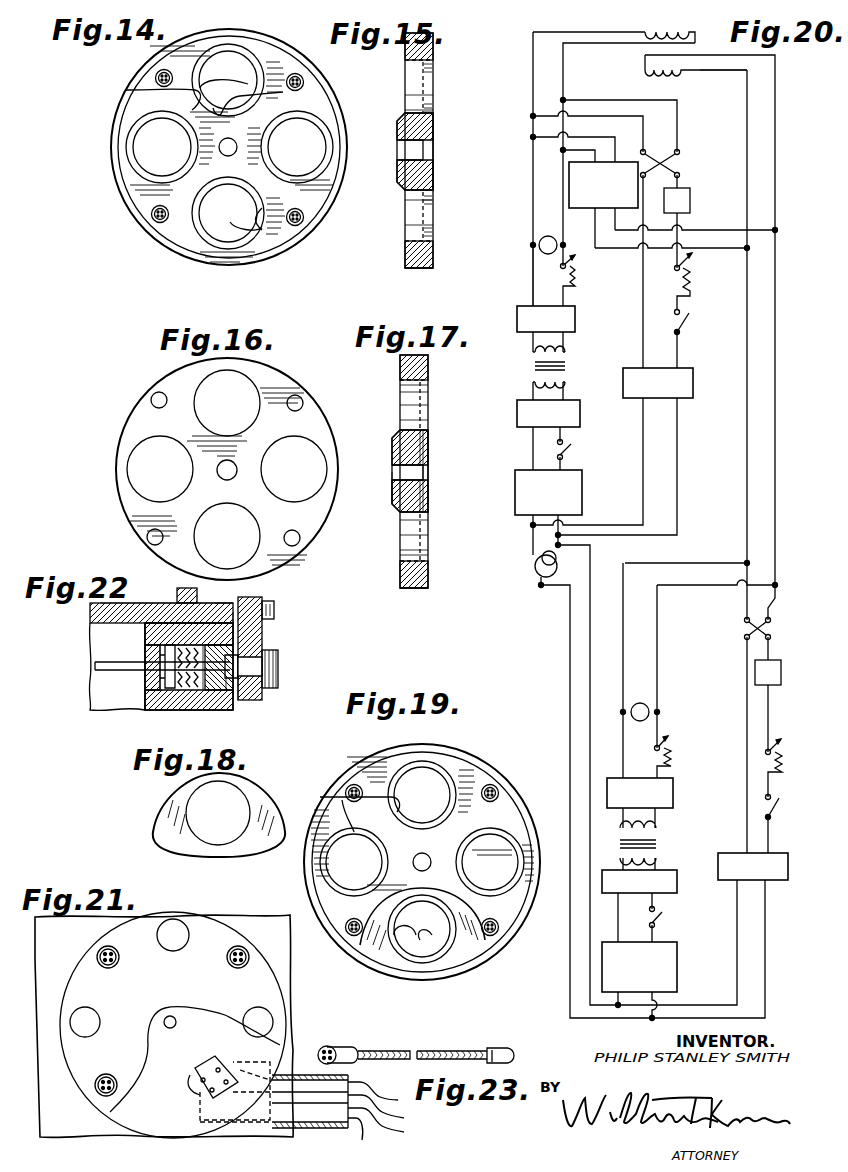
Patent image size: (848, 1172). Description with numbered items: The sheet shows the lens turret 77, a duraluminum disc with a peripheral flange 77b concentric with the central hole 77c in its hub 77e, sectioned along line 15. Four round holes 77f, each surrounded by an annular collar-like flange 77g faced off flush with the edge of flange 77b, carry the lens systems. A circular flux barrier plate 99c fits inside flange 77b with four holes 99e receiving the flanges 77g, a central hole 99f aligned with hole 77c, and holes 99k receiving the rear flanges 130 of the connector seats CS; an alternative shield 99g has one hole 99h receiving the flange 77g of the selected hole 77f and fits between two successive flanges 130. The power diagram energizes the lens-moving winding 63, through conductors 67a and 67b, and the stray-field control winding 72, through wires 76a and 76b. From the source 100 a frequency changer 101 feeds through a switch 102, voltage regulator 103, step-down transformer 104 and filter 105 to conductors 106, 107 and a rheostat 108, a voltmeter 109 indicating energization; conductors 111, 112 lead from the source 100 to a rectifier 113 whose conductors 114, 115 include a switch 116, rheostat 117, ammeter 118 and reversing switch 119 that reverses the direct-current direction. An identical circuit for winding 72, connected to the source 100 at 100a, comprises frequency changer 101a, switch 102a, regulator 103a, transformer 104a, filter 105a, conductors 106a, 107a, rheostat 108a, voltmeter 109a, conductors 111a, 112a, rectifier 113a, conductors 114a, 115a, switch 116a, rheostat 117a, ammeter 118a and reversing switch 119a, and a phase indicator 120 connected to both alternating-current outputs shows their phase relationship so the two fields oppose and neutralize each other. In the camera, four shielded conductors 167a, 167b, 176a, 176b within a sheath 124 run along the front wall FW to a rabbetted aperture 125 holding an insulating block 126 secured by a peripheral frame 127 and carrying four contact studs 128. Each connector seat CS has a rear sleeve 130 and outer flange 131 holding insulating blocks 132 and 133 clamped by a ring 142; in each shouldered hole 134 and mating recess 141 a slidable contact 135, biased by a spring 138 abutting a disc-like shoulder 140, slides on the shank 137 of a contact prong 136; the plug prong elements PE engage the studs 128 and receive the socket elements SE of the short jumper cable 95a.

In FIG. 14, the section line 15 is at (262, 15).
In FIG. 20, the lens-moving winding 63 is at (668, 31).
In FIG. 20, the conductor 67a is at (574, 33).
In FIG. 20, the conductor 67b is at (590, 44).
In FIG. 20, the stray-field control winding 72 is at (660, 72).
In FIG. 20, the wire 76a is at (745, 58).
In FIG. 20, the wire 76b is at (712, 71).
In FIG. 14, the turret 77 is at (156, 246).
In FIG. 15, the turret 77 is at (404, 250).
In FIG. 17, the turret 77 is at (399, 582).
In FIG. 22, the turret 77 is at (185, 590).
In FIG. 19, the turret 77 is at (339, 952).
In FIG. 21, the turret 77 is at (217, 925).
In FIG. 14, the peripheral flange 77b is at (191, 253).
In FIG. 15, the peripheral flange 77b is at (432, 268).
In FIG. 17, the peripheral flange 77b is at (428, 588).
In FIG. 19, the peripheral flange 77b is at (322, 920).
In FIG. 21, the peripheral flange 77b is at (277, 931).
In FIG. 14, the central hole 77c is at (233, 143).
In FIG. 15, the central hole 77c is at (430, 150).
In FIG. 17, the central hole 77c is at (396, 480).
In FIG. 19, the central hole 77c is at (422, 862).
In FIG. 15, the centrally thickened portion 77e is at (398, 116).
In FIG. 17, the centrally thickened portion 77e is at (396, 435).
In FIG. 14, the round holes 77f is at (283, 92).
In FIG. 15, the round holes 77f is at (426, 95).
In FIG. 17, the round holes 77f is at (424, 408).
In FIG. 19, the round holes 77f is at (445, 785).
In FIG. 14, the annular collar-like flange 77g is at (280, 195).
In FIG. 19, the annular collar-like flange 77g is at (380, 988).
In FIG. 16, the circular flux barrier plate 99c is at (115, 460).
In FIG. 17, the circular flux barrier plate 99c is at (431, 494).
In FIG. 16, the holes 99e is at (165, 420).
In FIG. 17, the holes 99e is at (427, 442).
In FIG. 16, the central hole 99f is at (232, 466).
In FIG. 17, the central hole 99f is at (425, 472).
In FIG. 18, the shield 99g is at (170, 850).
In FIG. 19, the shield 99g is at (474, 945).
In FIG. 18, the hole 99h is at (198, 835).
In FIG. 19, the hole 99h is at (394, 935).
In FIG. 16, the holes 99k is at (158, 392).
In FIG. 23, the short cable 95a is at (438, 1048).
In FIG. 20, the source 100 is at (558, 570).
In FIG. 20, the generator lead 100a is at (647, 770).
In FIG. 20, the frequency changer 101 is at (584, 479).
In FIG. 20, the frequency changer 101a is at (679, 951).
In FIG. 20, the switch 102 is at (566, 448).
In FIG. 20, the switch 102a is at (666, 914).
In FIG. 20, the voltage regulator 103 is at (581, 411).
In FIG. 20, the voltage regulator 103a is at (679, 884).
In FIG. 20, the step-down transformer 104 is at (568, 366).
In FIG. 20, the step-down transformer 104a is at (660, 844).
In FIG. 20, the filter 105 is at (576, 319).
In FIG. 20, the filter 105a is at (675, 794).
In FIG. 20, the conductor 106 is at (532, 278).
In FIG. 20, the conductor 106a is at (749, 312).
In FIG. 20, the conductor 107 is at (565, 290).
In FIG. 20, the conductor 107a is at (776, 330).
In FIG. 20, the rheostat 108 is at (573, 270).
In FIG. 20, the rheostat 108a is at (675, 755).
In FIG. 20, the voltmeter 109 is at (545, 236).
In FIG. 20, the voltmeter 109a is at (648, 692).
In FIG. 20, the conductor 111 is at (642, 506).
In FIG. 20, the conductor 111a is at (737, 996).
In FIG. 20, the conductor 112 is at (679, 506).
In FIG. 20, the conductor 112a is at (766, 990).
In FIG. 20, the rectifier unit 113 is at (693, 385).
In FIG. 20, the rectifier unit 113a is at (770, 884).
In FIG. 20, the conductor 114 is at (642, 345).
In FIG. 20, the conductor 114a is at (745, 636).
In FIG. 20, the conductor 115 is at (679, 345).
In FIG. 20, the conductor 115a is at (770, 618).
In FIG. 20, the switch 116 is at (687, 310).
In FIG. 20, the switch 116a is at (776, 795).
In FIG. 20, the rheostat 117 is at (697, 278).
In FIG. 20, the rheostat 117a is at (795, 732).
In FIG. 20, the ammeter 118 is at (691, 203).
In FIG. 20, the ammeter 118a is at (782, 674).
In FIG. 20, the reversing switch 119 is at (682, 162).
In FIG. 20, the reversing switch 119a is at (771, 638).
In FIG. 20, the phase indicator 120 is at (584, 209).
In FIG. 23, the shielding 124 is at (290, 1130).
In FIG. 22, the rabbetted aperture 125 is at (263, 644).
In FIG. 21, the rabbetted aperture 125 is at (205, 1068).
In FIG. 22, the insulating block 126 is at (264, 696).
In FIG. 21, the insulating block 126 is at (228, 1052).
In FIG. 22, the peripheral frame 127 is at (275, 606).
In FIG. 22, the contact studs 128 is at (280, 668).
In FIG. 21, the contact studs 128 is at (200, 1080).
In FIG. 14, the annular internally shouldered sleeve 130 is at (158, 72).
In FIG. 22, the annular internally shouldered sleeve 130 is at (220, 606).
In FIG. 19, the annular internally shouldered sleeve 130 is at (352, 784).
In FIG. 22, the annular flange 131 is at (110, 602).
In FIG. 22, the insulating block 132 is at (240, 704).
In FIG. 22, the insulating block 133 is at (148, 706).
In FIG. 22, the shouldered round hole 134 is at (205, 700).
In FIG. 22, the contact 135 is at (234, 692).
In FIG. 22, the contact prong 136 is at (122, 668).
In FIG. 22, the shank 137 is at (217, 636).
In FIG. 22, the spring 138 is at (182, 636).
In FIG. 22, the disc-like shoulder 140 is at (147, 650).
In FIG. 22, the recess 141 is at (185, 696).
In FIG. 22, the clamping ring 142 is at (90, 628).
In FIG. 23, the conductor 167a is at (391, 1098).
In FIG. 23, the conductor 167b is at (394, 1113).
In FIG. 23, the conductor 176a is at (394, 1129).
In FIG. 23, the conductor 176b is at (371, 1139).
In FIG. 22, the connector seats CS is at (88, 612).
In FIG. 21, the connector seats CS is at (120, 962).
In FIG. 22, the front wall FW is at (263, 625).
In FIG. 21, the front wall FW is at (197, 1122).
In FIG. 22, the plug prong contact elements PE is at (98, 666).
In FIG. 23, the socket elements SE is at (350, 1046).